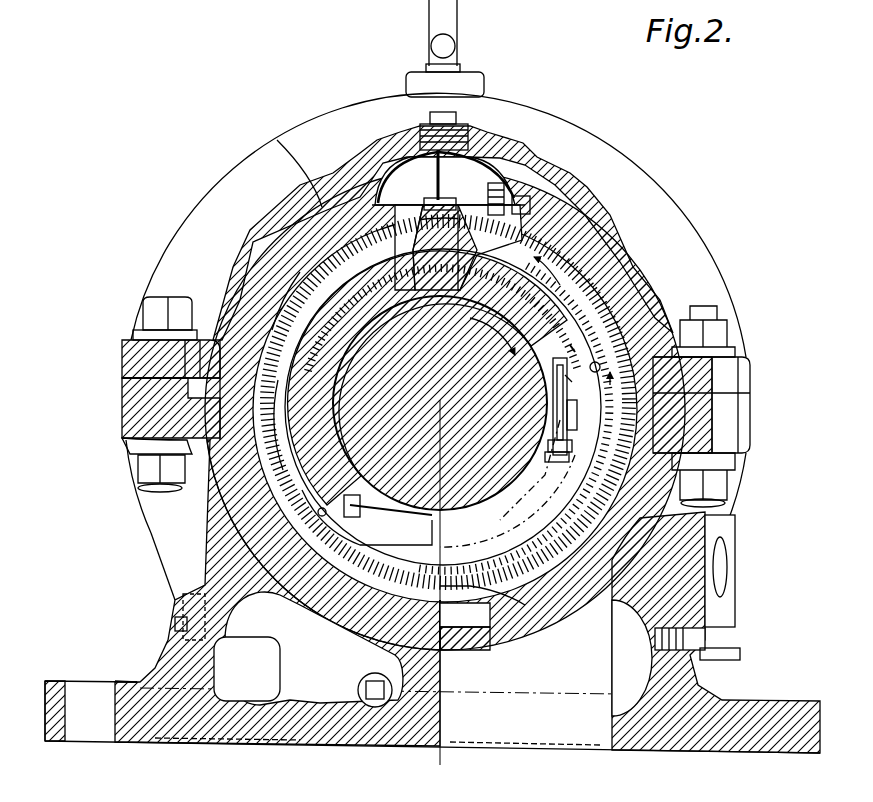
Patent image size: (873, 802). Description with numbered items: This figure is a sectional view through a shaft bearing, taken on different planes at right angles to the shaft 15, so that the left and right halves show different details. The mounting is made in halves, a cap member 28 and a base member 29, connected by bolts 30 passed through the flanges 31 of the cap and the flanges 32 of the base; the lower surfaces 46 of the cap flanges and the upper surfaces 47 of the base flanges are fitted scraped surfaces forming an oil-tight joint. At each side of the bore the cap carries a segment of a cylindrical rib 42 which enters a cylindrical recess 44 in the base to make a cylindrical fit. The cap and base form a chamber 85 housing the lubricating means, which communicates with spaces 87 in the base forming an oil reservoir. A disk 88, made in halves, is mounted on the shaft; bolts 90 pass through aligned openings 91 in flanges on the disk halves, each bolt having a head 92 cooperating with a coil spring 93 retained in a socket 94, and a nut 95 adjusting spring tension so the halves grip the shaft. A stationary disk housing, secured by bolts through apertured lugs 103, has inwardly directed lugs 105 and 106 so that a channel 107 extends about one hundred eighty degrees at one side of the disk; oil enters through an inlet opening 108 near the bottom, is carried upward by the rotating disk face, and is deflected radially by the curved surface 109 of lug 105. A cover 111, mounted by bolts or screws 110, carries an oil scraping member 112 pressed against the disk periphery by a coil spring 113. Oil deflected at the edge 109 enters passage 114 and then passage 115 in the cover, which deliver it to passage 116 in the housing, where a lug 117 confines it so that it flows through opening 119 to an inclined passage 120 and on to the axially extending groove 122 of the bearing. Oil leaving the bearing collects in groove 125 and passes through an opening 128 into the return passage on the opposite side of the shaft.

The shaft 15 is at (443, 319).
The cap member 28 is at (603, 240).
The base member 29 is at (196, 597).
The bolts 30 is at (150, 312).
The flanges of the cap 31 is at (128, 362).
The flanges of the base 32 is at (135, 420).
The cylindrical rib segment 42 is at (210, 336).
The cylindrical recess segment 44 is at (164, 554).
The lower surfaces of the cap flanges 46 is at (165, 377).
The upper surfaces of the base flanges 47 is at (128, 397).
The chamber 85 is at (503, 632).
The spaces 87 is at (306, 680).
The disk 88 is at (535, 345).
The bolts 90 is at (570, 378).
The aligned openings 91 is at (555, 410).
The head 92 is at (568, 458).
The coil spring 93 is at (572, 442).
The socket 94 is at (577, 424).
The nut 95 is at (567, 352).
The lugs 103 is at (633, 333).
The lug 105 is at (452, 208).
The lug 106 is at (463, 612).
The channel 107 is at (587, 290).
The inlet opening 108 is at (480, 620).
The curved surface 109 is at (468, 242).
The bolts or screws 110 is at (505, 196).
The cover 111 is at (478, 163).
The oil scraping member 112 is at (468, 150).
The coil spring 113 is at (452, 148).
The passage 114 is at (497, 182).
The passage 115 is at (372, 162).
The passage 116 is at (296, 300).
The lug 117 is at (367, 547).
The opening 119 is at (254, 427).
The passage 120 is at (330, 362).
The axially extending groove 122 is at (360, 320).
The axially extending groove 125 is at (507, 483).
The opening 128 is at (600, 367).